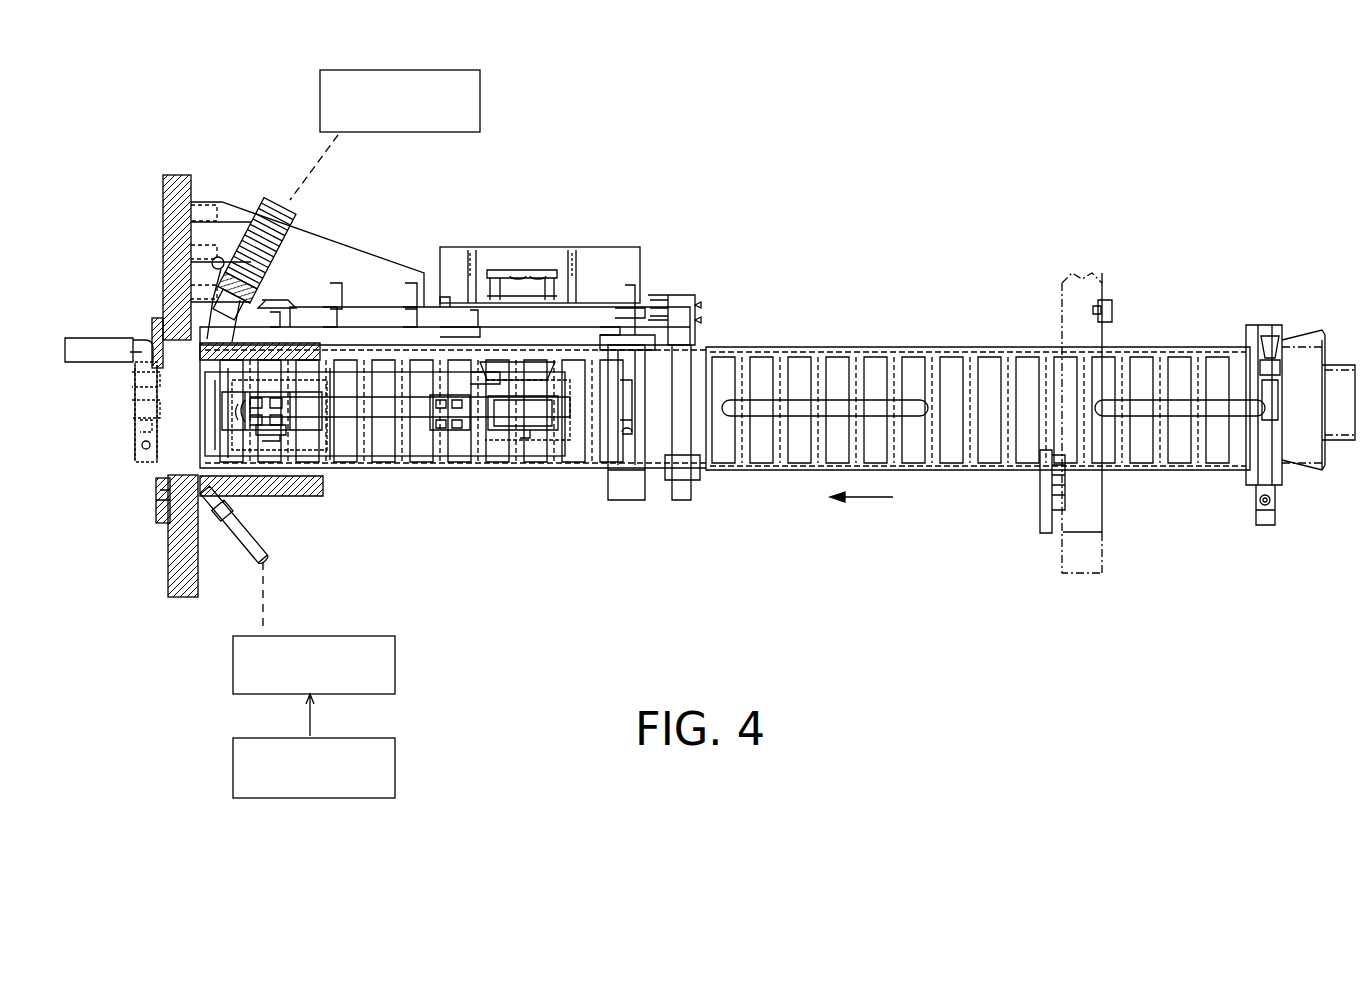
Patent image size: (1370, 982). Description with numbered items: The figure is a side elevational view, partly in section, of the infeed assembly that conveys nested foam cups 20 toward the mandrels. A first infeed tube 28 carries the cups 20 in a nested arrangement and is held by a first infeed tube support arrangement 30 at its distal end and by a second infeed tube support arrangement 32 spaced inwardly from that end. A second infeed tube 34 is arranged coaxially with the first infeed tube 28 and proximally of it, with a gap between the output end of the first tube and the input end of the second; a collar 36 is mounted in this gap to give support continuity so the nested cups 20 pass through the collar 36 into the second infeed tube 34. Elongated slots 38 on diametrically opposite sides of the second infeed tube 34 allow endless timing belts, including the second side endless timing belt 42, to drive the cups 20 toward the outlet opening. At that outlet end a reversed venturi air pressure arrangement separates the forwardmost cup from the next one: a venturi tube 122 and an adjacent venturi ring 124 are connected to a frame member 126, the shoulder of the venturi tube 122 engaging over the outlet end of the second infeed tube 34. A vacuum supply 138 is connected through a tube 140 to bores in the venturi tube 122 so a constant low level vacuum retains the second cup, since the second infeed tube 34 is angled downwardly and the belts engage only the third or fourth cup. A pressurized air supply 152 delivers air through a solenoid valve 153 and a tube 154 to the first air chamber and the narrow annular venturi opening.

The cups 20 is at (836, 375).
The first infeed tube 28 is at (905, 348).
The first infeed tube support arrangement 30 is at (1222, 501).
The second infeed tube support arrangement 32 is at (1036, 546).
The second infeed tube 34 is at (553, 478).
The collar 36 is at (683, 500).
The elongated slots 38 is at (383, 440).
The second side endless timing belt 42 is at (358, 417).
The venturi tube 122 is at (283, 337).
The venturi ring 124 is at (154, 330).
The frame member 126 is at (178, 170).
The vacuum supply 138 is at (484, 92).
The tube 140 is at (262, 195).
The pressurized air supply 152 is at (398, 762).
The solenoid valve 153 is at (398, 686).
The tube 154 is at (244, 516).